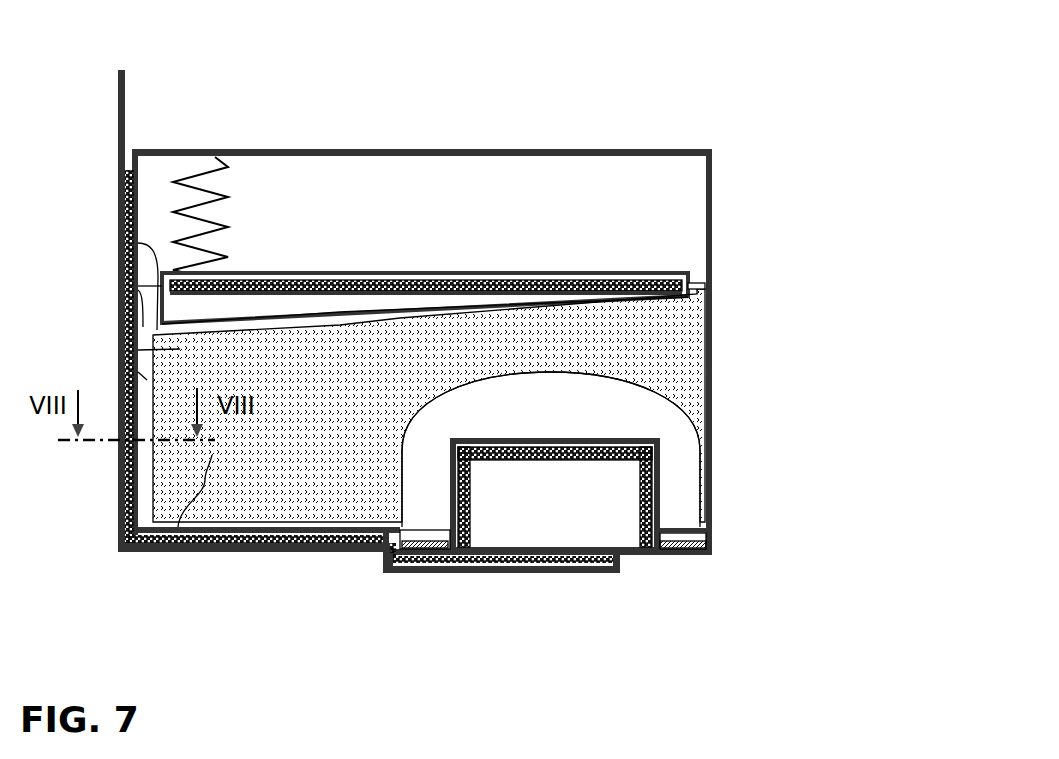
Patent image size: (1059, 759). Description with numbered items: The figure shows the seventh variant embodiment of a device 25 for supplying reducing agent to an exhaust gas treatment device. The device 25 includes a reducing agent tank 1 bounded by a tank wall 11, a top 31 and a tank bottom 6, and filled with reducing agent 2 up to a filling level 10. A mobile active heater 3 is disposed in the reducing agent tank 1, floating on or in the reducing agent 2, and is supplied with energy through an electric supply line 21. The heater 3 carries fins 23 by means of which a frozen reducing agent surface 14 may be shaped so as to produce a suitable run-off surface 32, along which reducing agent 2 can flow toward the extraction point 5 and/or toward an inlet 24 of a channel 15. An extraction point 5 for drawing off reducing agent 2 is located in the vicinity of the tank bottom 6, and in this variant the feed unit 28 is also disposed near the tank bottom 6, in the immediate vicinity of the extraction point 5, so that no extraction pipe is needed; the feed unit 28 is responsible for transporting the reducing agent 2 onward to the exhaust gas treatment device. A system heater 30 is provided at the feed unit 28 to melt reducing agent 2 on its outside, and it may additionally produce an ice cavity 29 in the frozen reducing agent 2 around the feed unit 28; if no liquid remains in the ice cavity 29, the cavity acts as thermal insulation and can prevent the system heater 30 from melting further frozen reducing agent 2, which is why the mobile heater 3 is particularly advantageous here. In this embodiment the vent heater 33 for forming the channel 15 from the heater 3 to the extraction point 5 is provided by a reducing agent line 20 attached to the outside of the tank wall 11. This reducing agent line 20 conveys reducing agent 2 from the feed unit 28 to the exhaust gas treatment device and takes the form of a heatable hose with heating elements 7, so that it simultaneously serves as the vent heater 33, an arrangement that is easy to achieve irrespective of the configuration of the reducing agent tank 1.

The reducing agent tank 1 is at (550, 150).
The reducing agent 2 is at (118, 350).
The heater 3 is at (263, 273).
The extraction point 5 is at (446, 543).
The tank bottom 6 is at (220, 552).
The heating elements 7 is at (158, 552).
The filling level 10 is at (708, 289).
The tank wall 11 is at (118, 468).
The frozen reducing agent surface 14 is at (712, 280).
The channel 15 is at (118, 370).
The reducing agent line 20 is at (370, 573).
The electric supply line 21 is at (215, 157).
The fins 23 is at (118, 262).
The inlet 24 is at (118, 286).
The device 25 is at (651, 124).
The feed unit 28 is at (541, 573).
The ice cavity 29 is at (497, 390).
The system heater 30 is at (640, 518).
The top 31 is at (390, 150).
The run-off surface 32 is at (353, 323).
The vent heater 33 is at (118, 513).